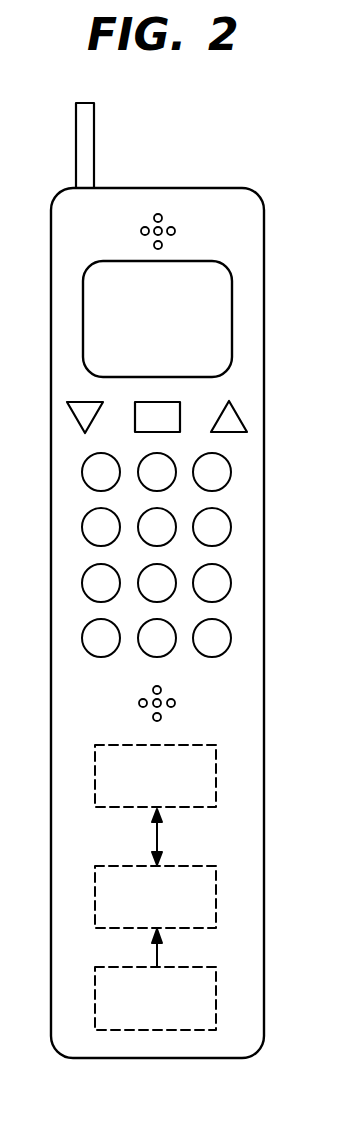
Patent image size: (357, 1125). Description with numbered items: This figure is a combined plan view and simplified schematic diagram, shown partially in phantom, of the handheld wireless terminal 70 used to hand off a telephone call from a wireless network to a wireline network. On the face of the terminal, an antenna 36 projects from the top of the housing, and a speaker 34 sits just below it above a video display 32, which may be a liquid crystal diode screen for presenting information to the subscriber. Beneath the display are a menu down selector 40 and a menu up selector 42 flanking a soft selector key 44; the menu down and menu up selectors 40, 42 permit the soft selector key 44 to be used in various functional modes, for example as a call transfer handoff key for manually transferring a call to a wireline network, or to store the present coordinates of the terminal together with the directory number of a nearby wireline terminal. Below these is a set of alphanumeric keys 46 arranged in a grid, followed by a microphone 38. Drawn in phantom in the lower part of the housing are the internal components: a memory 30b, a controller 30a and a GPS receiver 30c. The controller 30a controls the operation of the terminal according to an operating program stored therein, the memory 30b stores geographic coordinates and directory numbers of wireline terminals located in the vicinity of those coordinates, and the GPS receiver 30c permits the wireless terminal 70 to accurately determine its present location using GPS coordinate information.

The wireless terminal 70 is at (252, 146).
The antenna 36 is at (94, 116).
The speaker 34 is at (156, 212).
The video display 32 is at (232, 302).
The menu down selector 40 is at (78, 410).
The soft selector key 44 is at (173, 415).
The menu up selector 42 is at (238, 425).
The set of alphanumeric keys 46 is at (248, 455).
The microphone 38 is at (162, 697).
The memory 30b is at (216, 758).
The controller 30a is at (216, 882).
The GPS receiver 30c is at (216, 983).